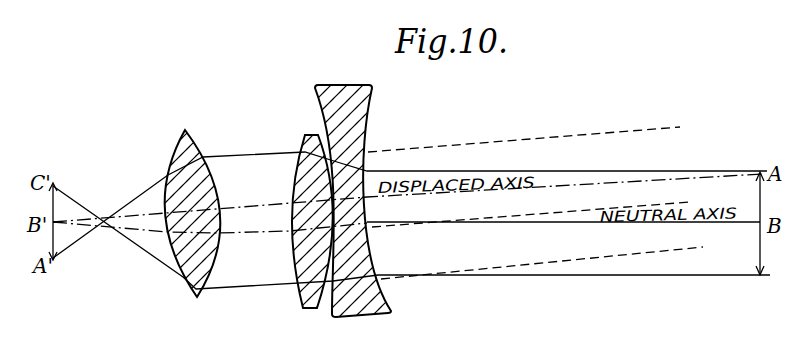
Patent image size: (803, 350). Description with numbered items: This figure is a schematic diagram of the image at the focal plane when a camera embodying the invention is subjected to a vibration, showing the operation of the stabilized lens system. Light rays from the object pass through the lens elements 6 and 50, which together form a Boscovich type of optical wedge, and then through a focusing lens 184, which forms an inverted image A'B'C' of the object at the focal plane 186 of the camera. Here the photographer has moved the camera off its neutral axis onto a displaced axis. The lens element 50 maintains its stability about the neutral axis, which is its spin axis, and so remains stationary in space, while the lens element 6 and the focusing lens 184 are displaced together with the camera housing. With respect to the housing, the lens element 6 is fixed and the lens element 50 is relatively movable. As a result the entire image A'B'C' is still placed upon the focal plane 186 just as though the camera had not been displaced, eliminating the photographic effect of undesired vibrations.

The focal plane 186 is at (53, 204).
The focusing lens 184 is at (186, 129).
The lens element 50 is at (307, 137).
The lens element 6 is at (371, 109).